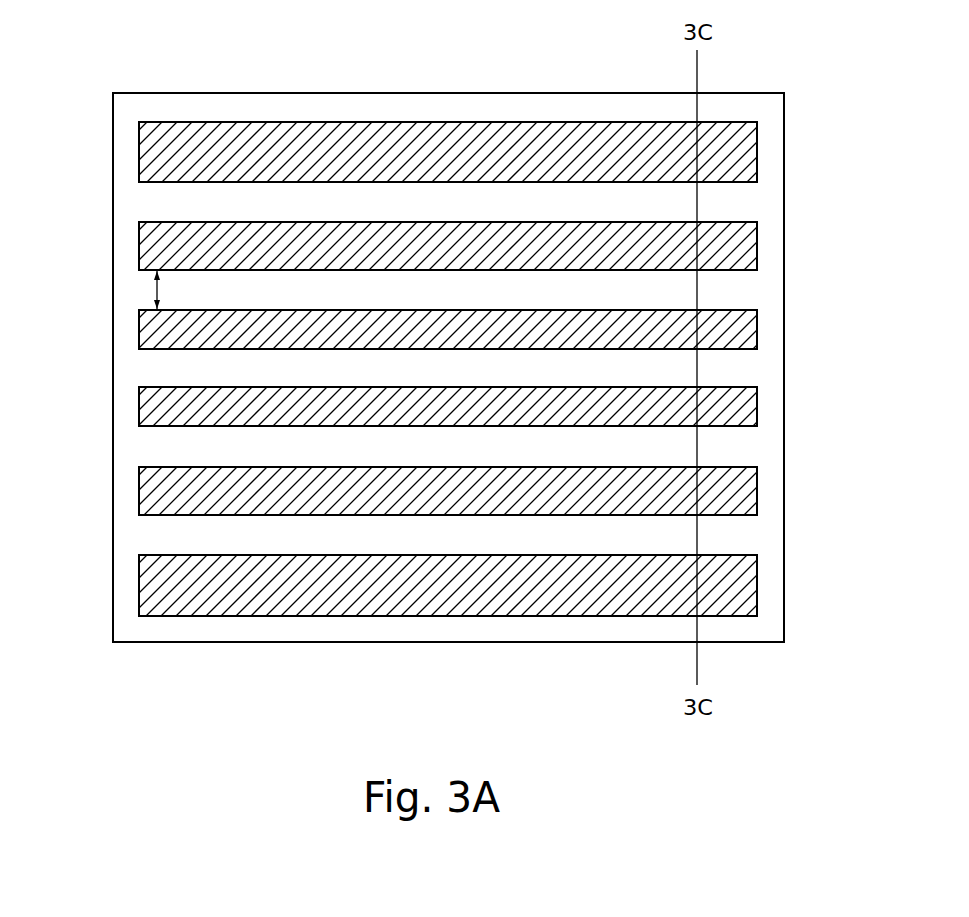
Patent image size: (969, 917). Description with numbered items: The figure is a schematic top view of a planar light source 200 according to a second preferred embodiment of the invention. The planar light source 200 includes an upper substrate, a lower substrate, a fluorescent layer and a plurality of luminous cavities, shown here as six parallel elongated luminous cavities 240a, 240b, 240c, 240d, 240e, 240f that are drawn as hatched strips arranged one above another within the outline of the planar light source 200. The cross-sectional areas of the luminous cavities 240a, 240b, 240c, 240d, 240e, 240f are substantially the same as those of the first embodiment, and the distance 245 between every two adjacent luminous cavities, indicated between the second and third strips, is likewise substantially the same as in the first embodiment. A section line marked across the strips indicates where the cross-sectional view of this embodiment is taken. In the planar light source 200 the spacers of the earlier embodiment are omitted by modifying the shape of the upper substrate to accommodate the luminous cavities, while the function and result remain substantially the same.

The planar light source 200 is at (118, 50).
The luminous cavity 240a is at (743, 143).
The luminous cavity 240b is at (743, 248).
The luminous cavity 240c is at (743, 332).
The luminous cavity 240d is at (743, 408).
The luminous cavity 240e is at (743, 493).
The luminous cavity 240f is at (740, 585).
The distance between adjacent luminous cavities 245 is at (157, 293).